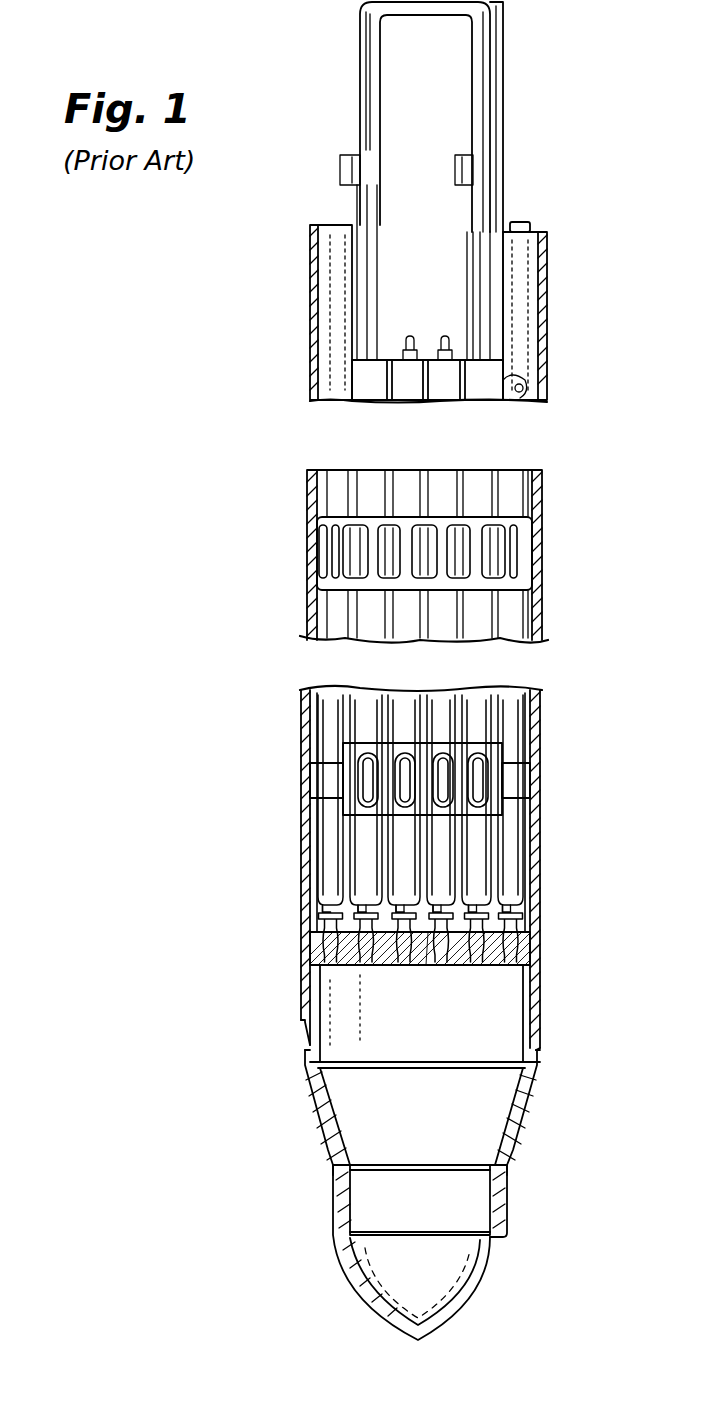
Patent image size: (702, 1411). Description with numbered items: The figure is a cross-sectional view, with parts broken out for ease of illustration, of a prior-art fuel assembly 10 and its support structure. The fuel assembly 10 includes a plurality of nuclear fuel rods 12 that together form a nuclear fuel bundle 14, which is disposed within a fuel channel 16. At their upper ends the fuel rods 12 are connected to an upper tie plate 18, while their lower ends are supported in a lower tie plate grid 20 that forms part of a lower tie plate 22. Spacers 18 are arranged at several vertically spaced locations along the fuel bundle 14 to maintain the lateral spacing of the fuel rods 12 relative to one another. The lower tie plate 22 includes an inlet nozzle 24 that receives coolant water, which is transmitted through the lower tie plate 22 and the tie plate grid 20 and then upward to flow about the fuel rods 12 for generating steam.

The fuel assembly 10 is at (200, 696).
The nuclear fuel rods 12 is at (368, 628).
The nuclear fuel bundle 14 is at (533, 891).
The fuel channel 16 is at (542, 710).
The upper tie plate 18 is at (378, 388).
The lower tie plate grid 20 is at (330, 965).
The lower tie plate 22 is at (534, 1082).
The inlet nozzle 24 is at (500, 1212).